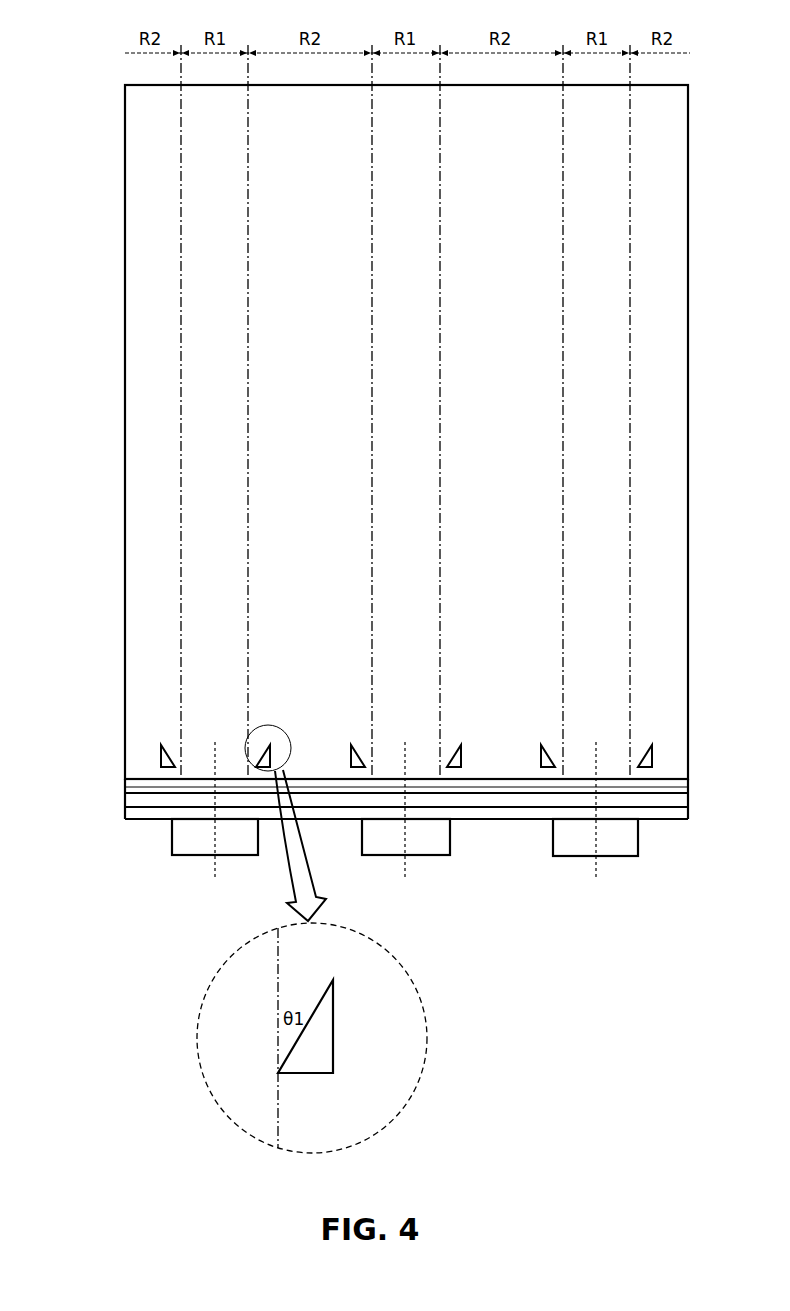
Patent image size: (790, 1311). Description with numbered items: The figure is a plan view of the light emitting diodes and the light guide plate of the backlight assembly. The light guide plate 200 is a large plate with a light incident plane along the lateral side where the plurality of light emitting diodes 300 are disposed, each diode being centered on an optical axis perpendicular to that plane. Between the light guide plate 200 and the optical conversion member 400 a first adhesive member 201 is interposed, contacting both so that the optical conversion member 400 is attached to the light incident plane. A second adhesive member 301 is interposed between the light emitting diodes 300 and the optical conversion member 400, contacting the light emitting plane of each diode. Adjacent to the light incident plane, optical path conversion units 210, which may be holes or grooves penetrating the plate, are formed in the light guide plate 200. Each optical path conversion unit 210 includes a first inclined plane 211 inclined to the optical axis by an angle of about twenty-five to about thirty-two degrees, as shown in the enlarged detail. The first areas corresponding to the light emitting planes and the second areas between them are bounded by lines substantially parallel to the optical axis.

The light guide plate 200 is at (135, 576).
The first adhesive member 201 is at (124, 787).
The optical conversion member 400 is at (124, 800).
The second adhesive member 301 is at (124, 816).
The light emitting diode 300 is at (172, 840).
The optical path conversion unit 210 is at (541, 762).
The first inclined plane 211 is at (310, 1019).